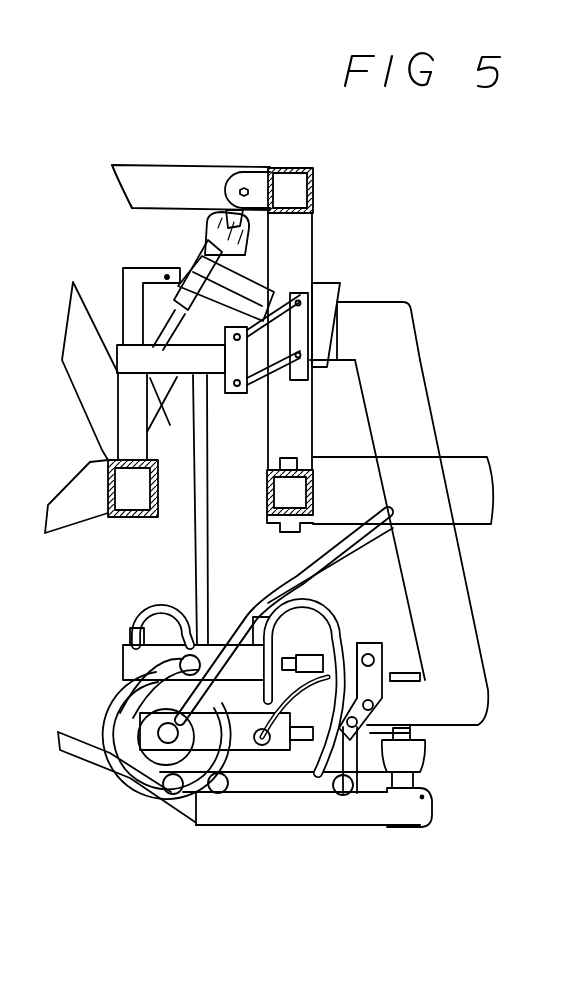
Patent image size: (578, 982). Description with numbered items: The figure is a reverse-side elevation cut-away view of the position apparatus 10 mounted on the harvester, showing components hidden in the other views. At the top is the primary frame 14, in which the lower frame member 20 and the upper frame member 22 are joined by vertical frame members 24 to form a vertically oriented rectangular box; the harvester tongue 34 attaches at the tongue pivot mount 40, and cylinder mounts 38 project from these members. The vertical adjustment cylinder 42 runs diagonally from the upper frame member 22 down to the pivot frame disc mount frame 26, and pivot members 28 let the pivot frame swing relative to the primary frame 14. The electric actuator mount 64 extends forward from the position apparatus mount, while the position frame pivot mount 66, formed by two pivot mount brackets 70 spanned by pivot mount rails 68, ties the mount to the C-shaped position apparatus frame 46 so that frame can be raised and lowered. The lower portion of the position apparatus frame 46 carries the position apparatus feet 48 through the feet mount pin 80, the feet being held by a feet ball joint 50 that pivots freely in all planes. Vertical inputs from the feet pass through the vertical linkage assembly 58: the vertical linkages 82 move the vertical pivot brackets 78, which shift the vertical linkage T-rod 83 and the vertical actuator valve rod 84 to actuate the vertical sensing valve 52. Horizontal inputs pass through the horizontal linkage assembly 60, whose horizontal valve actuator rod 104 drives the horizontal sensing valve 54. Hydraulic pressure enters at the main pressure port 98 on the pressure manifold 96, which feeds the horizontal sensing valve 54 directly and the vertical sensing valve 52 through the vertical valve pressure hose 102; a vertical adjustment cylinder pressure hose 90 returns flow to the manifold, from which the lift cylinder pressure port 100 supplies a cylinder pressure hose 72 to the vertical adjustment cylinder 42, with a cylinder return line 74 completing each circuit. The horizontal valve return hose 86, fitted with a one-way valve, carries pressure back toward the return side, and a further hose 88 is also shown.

The apparatus 10 is at (440, 302).
The primary frame 14 is at (113, 150).
The lower frame member 20 is at (268, 493).
The upper frame member 22 is at (318, 170).
The vertical frame members 24 is at (315, 230).
The pivot frame disc mount frame 26 is at (120, 517).
The pivot members 28 is at (158, 190).
The harvester tongue 34 is at (470, 453).
The cylinder mounts 38 is at (257, 180).
The tongue pivot mount 40 is at (267, 517).
The vertical adjustment cylinder 42 is at (222, 235).
The position apparatus frame 46 is at (433, 375).
The position apparatus feet 48 is at (432, 820).
The feet ball joint 50 is at (428, 765).
The vertical sensing valve 52 is at (133, 662).
The horizontal sensing valve 54 is at (153, 722).
The vertical linkage assembly 58 is at (383, 643).
The horizontal linkage assembly 60 is at (392, 790).
The electric actuator mount 64 is at (123, 268).
The position frame pivot mount 66 is at (332, 281).
The pivot mount rails 68 is at (262, 385).
The pivot mount brackets 70 is at (245, 387).
The cylinder pressure hose 72 is at (195, 408).
The cylinder return line 74 is at (165, 437).
The vertical pivot brackets 78 is at (392, 656).
The feet mount pin 80 is at (420, 670).
The vertical linkages 82 is at (353, 777).
The vertical linkage T-rod 83 is at (373, 665).
The vertical actuator valve rod 84 is at (302, 637).
The horizontal valve return hose 86 is at (173, 794).
The hose loop 88 is at (137, 610).
The vertical adjustment cylinder pressure hose 90 is at (268, 605).
The pressure manifold 96 is at (263, 790).
The main pressure port 98 is at (214, 793).
The lift cylinder pressure port 100 is at (340, 795).
The vertical valve pressure hose 102 is at (130, 778).
The horizontal valve actuator rod 104 is at (423, 743).